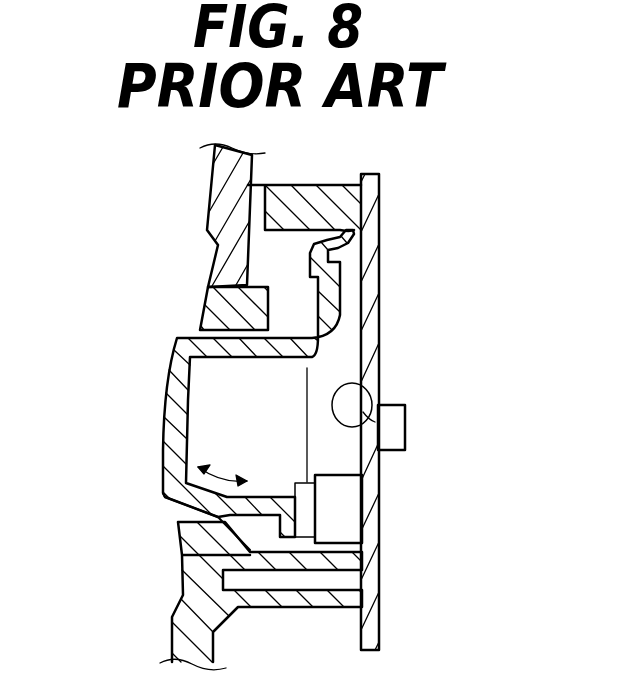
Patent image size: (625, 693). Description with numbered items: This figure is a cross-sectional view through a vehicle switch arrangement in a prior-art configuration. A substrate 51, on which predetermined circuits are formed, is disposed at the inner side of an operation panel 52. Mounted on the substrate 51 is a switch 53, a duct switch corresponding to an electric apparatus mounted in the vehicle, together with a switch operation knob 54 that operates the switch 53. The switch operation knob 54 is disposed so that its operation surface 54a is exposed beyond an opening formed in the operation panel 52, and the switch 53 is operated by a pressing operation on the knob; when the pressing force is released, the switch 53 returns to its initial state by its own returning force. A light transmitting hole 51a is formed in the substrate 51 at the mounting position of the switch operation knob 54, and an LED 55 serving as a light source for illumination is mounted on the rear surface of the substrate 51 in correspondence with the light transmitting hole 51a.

The substrate 51 is at (381, 298).
The light transmitting hole 51a is at (386, 384).
The operation panel 52 is at (212, 178).
The switch 53 is at (340, 515).
The switch operation knob 54 is at (165, 403).
The operation surface 54a is at (160, 476).
The LED 55 is at (395, 435).